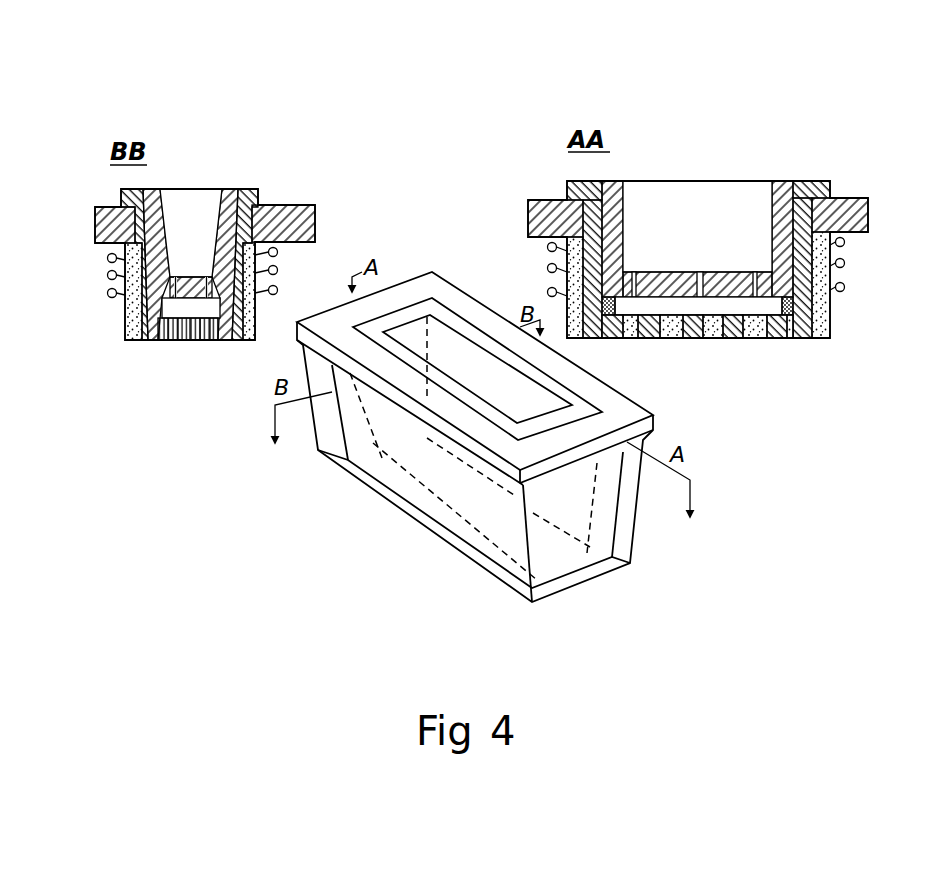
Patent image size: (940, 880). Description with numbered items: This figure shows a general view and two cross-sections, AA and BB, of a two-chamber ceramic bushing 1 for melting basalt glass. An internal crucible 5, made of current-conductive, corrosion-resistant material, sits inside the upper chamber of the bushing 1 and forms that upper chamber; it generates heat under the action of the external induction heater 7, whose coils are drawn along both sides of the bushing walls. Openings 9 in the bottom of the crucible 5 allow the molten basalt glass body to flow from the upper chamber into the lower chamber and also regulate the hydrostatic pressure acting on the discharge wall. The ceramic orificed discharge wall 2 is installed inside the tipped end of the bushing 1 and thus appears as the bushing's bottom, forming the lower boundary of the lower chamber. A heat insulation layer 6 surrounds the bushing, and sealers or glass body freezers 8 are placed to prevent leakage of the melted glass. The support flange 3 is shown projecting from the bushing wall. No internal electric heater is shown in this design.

The ceramic bushing 1 is at (258, 190).
The orificed discharge wall 2 is at (175, 337).
The support flange 3 is at (298, 210).
The internal crucible 5 is at (228, 189).
The heat insulation layer 6 is at (137, 313).
The external induction heater 7 is at (110, 275).
The sealer glass body freezer 8 is at (817, 338).
The openings at the bottom of the crucible 9 is at (750, 272).